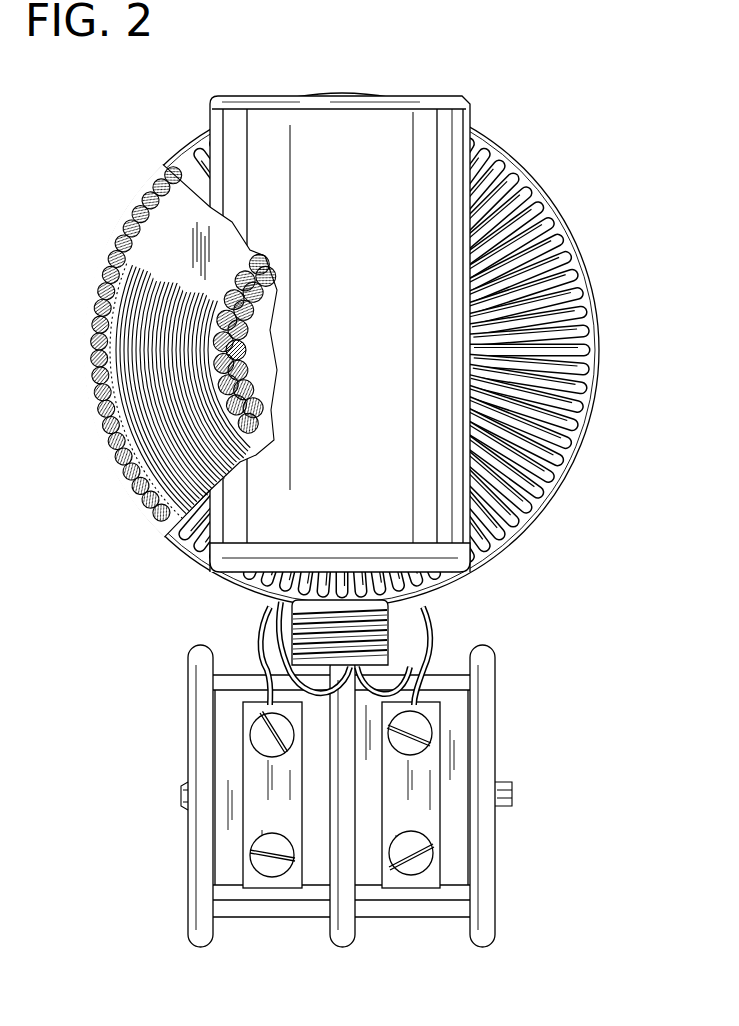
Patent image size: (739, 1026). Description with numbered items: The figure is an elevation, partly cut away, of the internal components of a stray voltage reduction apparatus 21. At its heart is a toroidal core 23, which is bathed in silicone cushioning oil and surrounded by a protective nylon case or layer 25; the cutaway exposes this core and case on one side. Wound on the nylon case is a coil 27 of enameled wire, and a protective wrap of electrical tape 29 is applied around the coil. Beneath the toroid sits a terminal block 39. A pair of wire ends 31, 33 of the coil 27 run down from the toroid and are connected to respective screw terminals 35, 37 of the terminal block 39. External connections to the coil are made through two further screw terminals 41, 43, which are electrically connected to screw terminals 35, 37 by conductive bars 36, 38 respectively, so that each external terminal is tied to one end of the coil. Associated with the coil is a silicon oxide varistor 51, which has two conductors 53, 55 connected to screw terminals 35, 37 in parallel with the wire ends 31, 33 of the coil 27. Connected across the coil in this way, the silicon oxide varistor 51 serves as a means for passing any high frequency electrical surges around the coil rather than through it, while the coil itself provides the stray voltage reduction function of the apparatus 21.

The stray voltage reduction apparatus 21 is at (442, 64).
The toroidal core 23 is at (135, 356).
The protective nylon case 25 is at (175, 232).
The coil 27 is at (587, 374).
The electrical tape 29 is at (540, 527).
The wire end 31 is at (432, 632).
The wire end 33 is at (262, 624).
The screw terminal 35 is at (418, 752).
The conductive bar 36 is at (425, 817).
The screw terminal 37 is at (258, 742).
The conductive bar 38 is at (255, 782).
The terminal block 39 is at (197, 868).
The screw terminal 41 is at (414, 875).
The screw terminal 43 is at (272, 877).
The silicon oxide varistor 51 is at (452, 118).
The conductor 53 is at (415, 668).
The conductor 55 is at (278, 670).